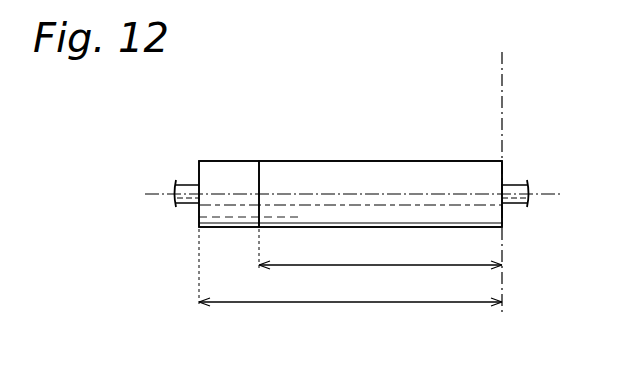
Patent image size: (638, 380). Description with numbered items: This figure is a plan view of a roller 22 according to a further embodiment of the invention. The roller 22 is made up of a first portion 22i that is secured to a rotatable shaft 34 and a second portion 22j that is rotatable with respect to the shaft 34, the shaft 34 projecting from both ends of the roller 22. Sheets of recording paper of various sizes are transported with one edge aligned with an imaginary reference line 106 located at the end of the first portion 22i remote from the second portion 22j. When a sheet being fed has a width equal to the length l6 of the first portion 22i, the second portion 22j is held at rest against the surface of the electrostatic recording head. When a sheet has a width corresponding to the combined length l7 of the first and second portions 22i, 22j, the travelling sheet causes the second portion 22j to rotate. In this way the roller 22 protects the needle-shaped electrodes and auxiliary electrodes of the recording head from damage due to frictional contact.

The roller 22 is at (350, 146).
The second portion 22j is at (240, 163).
The first portion 22i is at (410, 163).
The rotatable shaft 34 is at (188, 190).
The imaginary reference line 106 is at (502, 103).
The length of the first portion l6 is at (370, 266).
The combined length of the first and second portions l7 is at (370, 304).